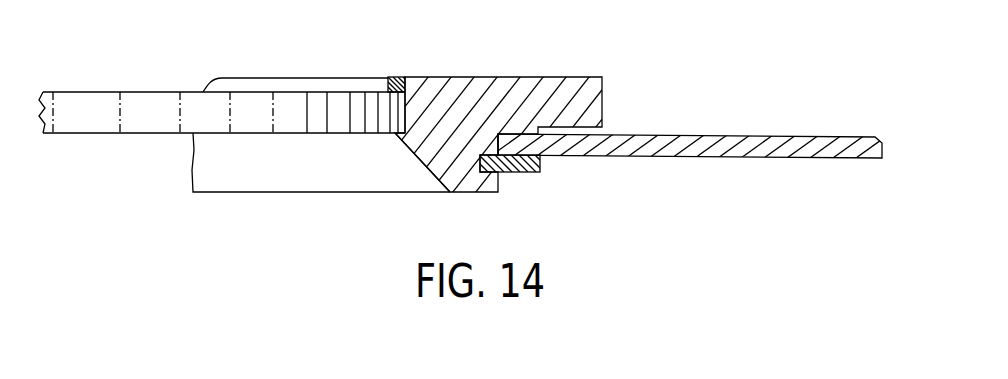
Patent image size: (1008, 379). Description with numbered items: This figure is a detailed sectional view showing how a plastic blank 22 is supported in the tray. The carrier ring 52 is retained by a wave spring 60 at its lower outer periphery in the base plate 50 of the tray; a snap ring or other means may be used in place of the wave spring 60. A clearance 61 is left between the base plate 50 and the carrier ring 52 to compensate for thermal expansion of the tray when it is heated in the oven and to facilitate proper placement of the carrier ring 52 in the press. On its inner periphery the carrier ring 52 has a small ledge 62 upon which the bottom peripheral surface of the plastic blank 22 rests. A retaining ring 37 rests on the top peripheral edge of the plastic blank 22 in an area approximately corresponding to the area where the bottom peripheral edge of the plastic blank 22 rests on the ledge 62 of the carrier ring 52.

The plastic blank 22 is at (154, 92).
The retaining ring 37 is at (396, 77).
The carrier ring 52 is at (470, 77).
The base plate 50 is at (683, 135).
The wave spring 60 is at (529, 172).
The clearance 61 is at (502, 137).
The ledge 62 is at (394, 136).